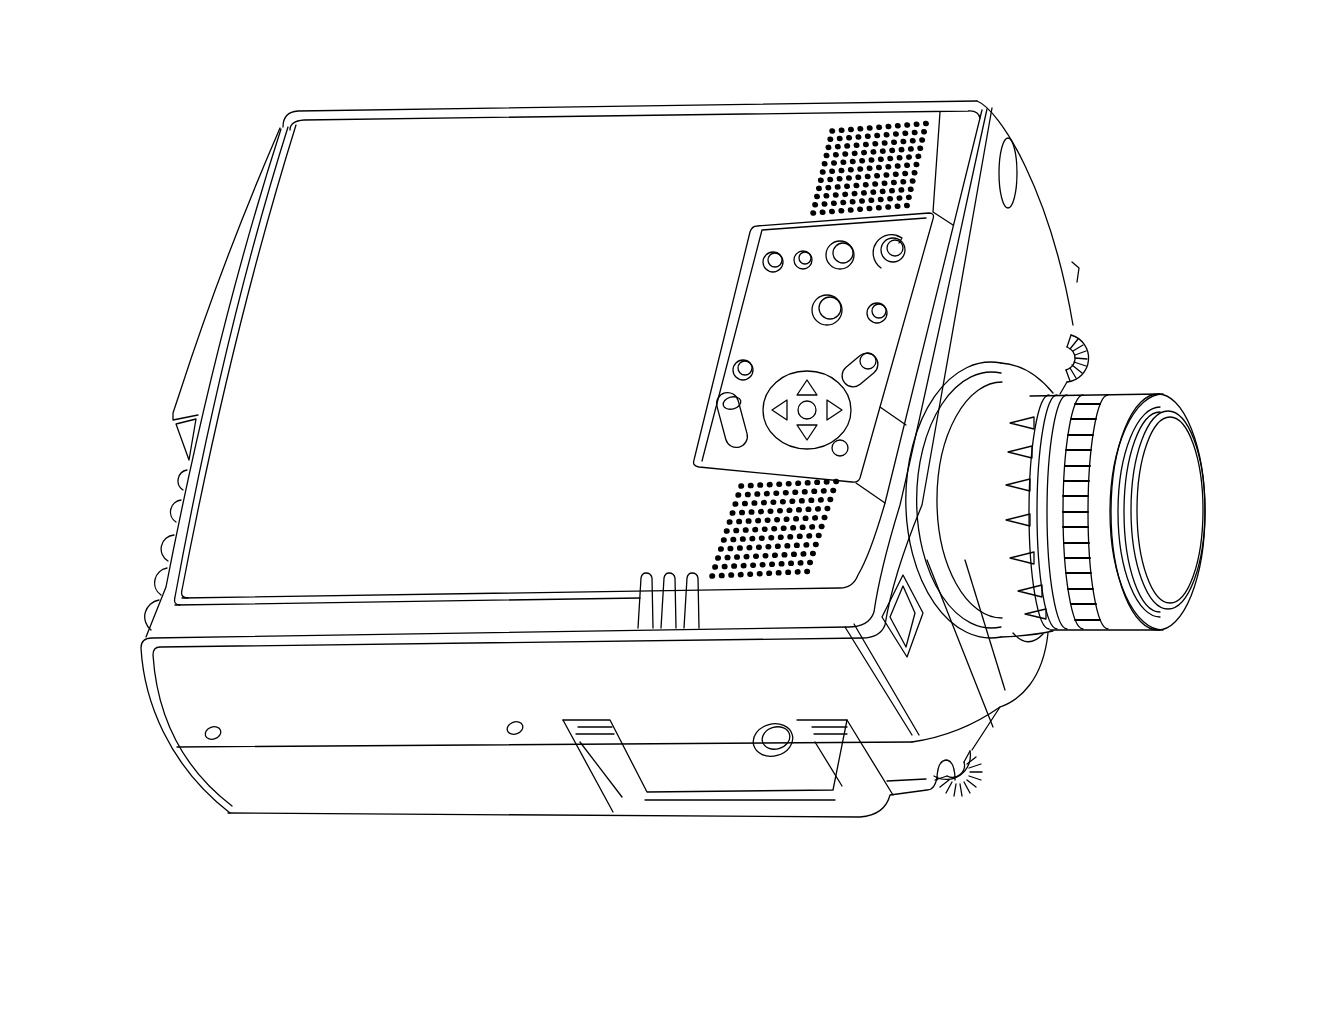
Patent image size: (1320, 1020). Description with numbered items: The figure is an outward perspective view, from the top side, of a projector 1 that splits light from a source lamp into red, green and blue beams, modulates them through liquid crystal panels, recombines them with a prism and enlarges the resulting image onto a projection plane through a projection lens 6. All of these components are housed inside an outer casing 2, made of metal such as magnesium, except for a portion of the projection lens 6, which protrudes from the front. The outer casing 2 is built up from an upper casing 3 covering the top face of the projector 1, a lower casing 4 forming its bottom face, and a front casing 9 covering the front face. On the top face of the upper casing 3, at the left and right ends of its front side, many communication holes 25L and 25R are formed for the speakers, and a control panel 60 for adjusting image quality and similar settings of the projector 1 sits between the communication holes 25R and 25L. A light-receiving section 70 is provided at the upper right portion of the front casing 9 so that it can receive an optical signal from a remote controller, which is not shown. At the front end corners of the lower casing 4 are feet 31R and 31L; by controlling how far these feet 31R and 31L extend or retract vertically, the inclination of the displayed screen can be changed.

The projector 1 is at (253, 119).
The outer casing 2 is at (187, 782).
The upper casing 3 is at (177, 687).
The lower casing 4 is at (278, 808).
The projection lens 6 is at (1088, 395).
The front casing 9 is at (1023, 675).
The communication holes 25L is at (812, 181).
The communication holes 25R is at (720, 530).
The foot 31L is at (1082, 333).
The foot 31R is at (982, 772).
The control panel 60 is at (737, 318).
The light-receiving section 70 is at (1012, 172).